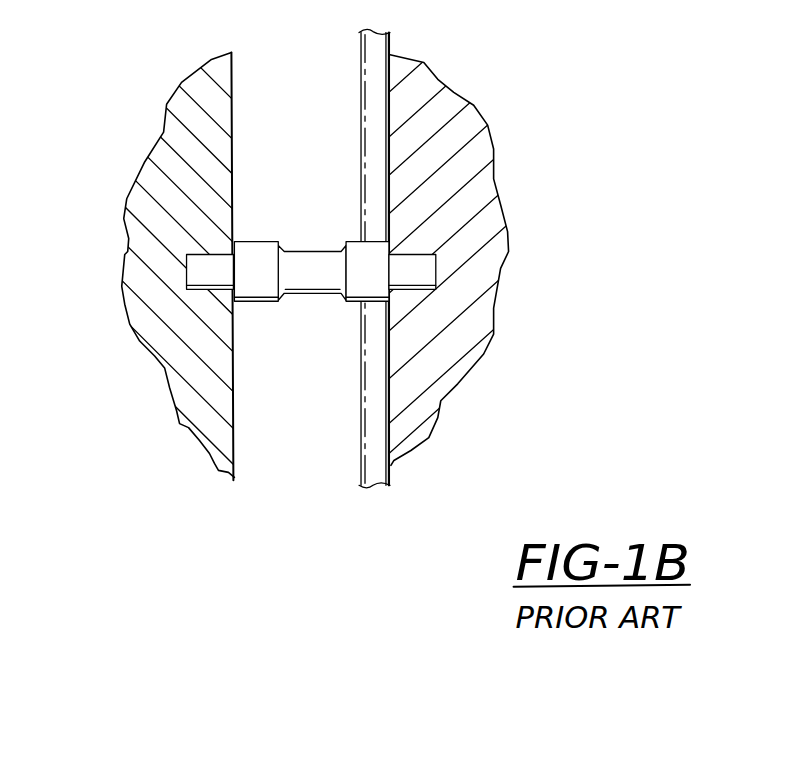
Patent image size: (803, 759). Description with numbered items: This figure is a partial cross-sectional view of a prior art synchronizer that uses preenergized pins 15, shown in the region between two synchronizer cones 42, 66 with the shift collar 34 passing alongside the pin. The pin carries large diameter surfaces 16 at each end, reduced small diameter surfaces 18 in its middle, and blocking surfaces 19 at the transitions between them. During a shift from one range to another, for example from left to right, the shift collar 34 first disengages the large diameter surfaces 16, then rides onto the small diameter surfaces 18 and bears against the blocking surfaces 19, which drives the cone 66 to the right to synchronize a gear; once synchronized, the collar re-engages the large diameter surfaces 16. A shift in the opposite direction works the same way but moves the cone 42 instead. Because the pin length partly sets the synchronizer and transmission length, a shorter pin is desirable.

The preenergized pin 15 is at (283, 190).
The large diameter surfaces 16 is at (369, 236).
The small diameter surfaces 18 is at (315, 250).
The blocking surfaces 19 is at (337, 302).
The shift collar 34 is at (375, 427).
The cone 42 is at (139, 248).
The cone 66 is at (482, 188).